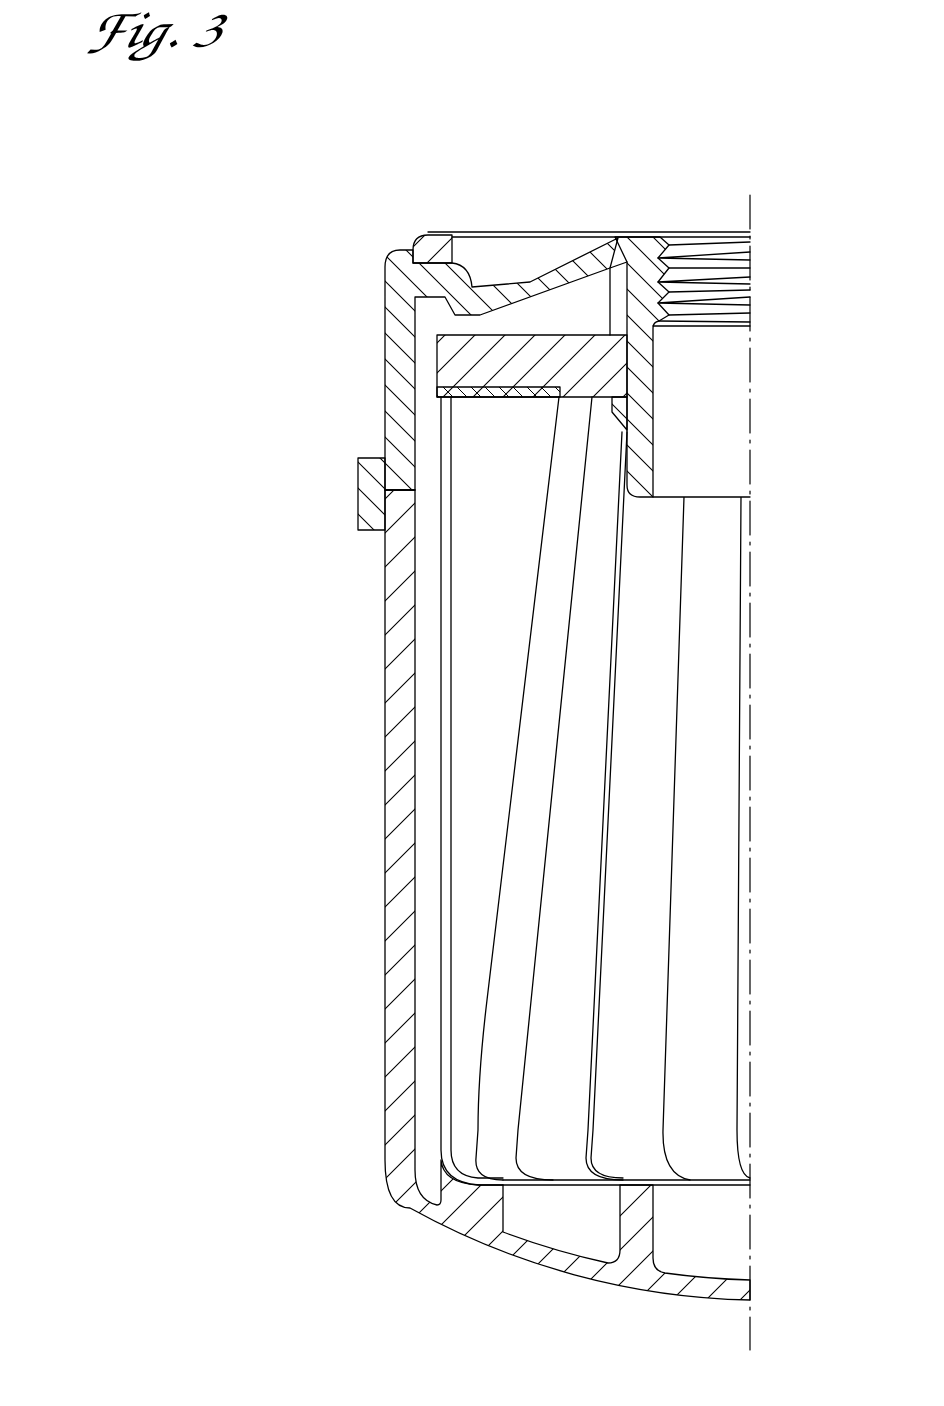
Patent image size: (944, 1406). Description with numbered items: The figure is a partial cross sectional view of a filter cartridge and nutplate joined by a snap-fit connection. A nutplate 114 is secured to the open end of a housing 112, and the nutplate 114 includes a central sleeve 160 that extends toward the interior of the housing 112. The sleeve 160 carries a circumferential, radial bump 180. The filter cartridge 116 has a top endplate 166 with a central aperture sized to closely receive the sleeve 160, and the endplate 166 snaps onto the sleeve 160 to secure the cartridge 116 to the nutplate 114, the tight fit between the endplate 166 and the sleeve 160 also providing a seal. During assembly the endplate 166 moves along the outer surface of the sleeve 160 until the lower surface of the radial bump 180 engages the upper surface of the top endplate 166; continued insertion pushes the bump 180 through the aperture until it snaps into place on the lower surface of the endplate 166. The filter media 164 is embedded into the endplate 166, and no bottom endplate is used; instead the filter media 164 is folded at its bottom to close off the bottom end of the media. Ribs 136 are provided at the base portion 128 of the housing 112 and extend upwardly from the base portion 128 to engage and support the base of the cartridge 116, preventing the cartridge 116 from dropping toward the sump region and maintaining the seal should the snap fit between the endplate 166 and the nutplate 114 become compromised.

The housing 112 is at (362, 820).
The nutplate 114 is at (385, 300).
The filter cartridge 116 is at (440, 997).
The base portion 128 is at (637, 1290).
The ribs 136 is at (492, 1215).
The central sleeve 160 is at (655, 450).
The filter media 164 is at (487, 697).
The top endplate 166 is at (436, 350).
The radial bump 180 is at (617, 427).